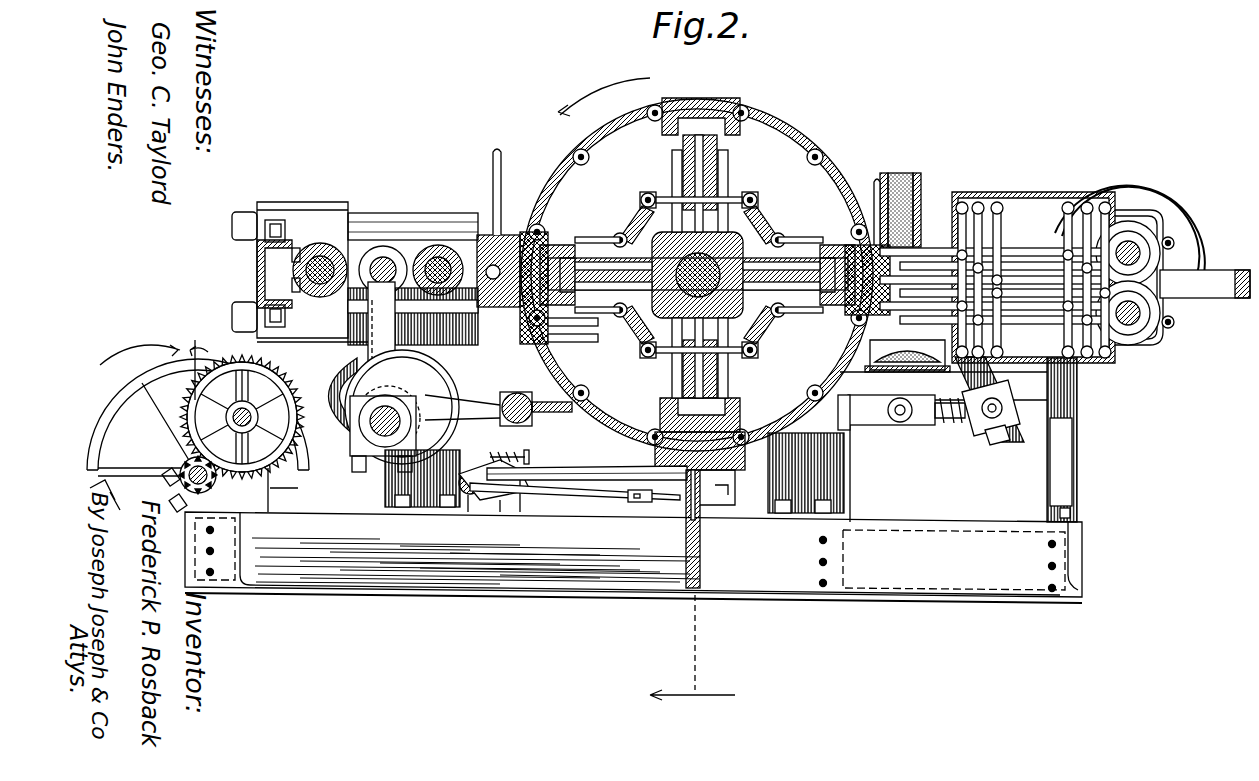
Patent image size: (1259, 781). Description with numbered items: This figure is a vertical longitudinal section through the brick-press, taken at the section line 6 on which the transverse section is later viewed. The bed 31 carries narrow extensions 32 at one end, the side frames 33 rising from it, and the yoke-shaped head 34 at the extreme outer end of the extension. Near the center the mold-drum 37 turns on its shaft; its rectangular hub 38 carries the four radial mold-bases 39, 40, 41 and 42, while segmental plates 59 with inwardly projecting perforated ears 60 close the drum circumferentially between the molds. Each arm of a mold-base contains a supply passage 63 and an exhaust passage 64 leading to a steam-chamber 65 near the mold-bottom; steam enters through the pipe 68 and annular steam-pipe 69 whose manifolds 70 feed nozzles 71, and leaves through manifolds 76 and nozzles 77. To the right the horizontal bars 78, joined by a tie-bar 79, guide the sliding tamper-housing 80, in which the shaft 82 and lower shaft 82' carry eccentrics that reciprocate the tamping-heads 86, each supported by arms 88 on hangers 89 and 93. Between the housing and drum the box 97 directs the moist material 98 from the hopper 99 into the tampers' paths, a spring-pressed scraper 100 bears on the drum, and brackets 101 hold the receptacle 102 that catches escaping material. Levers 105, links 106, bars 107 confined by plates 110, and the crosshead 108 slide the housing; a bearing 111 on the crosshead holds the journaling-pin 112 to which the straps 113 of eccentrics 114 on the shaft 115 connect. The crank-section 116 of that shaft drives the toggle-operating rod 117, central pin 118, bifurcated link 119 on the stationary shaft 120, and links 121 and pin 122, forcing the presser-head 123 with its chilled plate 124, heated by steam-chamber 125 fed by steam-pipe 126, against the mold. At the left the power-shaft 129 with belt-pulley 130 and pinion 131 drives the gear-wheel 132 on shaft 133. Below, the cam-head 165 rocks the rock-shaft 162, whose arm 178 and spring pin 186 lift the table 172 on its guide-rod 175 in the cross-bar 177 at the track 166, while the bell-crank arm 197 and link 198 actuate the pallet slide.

The section line 6 is at (692, 661).
The bed 31 is at (540, 600).
The narrow hollow extension 32 is at (1000, 530).
The frame 33 is at (855, 482).
The yoke-shaped head 34 is at (1077, 460).
The mold-drum 37 is at (770, 100).
The hub 38 is at (790, 235).
The mold-base 39 is at (805, 255).
The mold-base 40 is at (683, 160).
The mold-base 41 is at (565, 331).
The mold-base 42 is at (698, 351).
The segmental plate 59 is at (697, 264).
The perforated ear 60 is at (698, 275).
The steam-passage 63 is at (680, 160).
The steam-passage 64 is at (728, 168).
The steam-chamber 65 is at (745, 140).
The pipe 68 is at (765, 268).
The annular steam-pipe 69 is at (699, 276).
The manifold 70 is at (731, 265).
The nozzle 71 is at (663, 280).
The manifold 76 is at (709, 278).
The nozzle 77 is at (699, 251).
The horizontal bar 78 is at (1208, 272).
The tie-bar 79 is at (1238, 298).
The tamper-housing 80 is at (1045, 192).
The shaft 82 is at (1147, 225).
The lower shaft 82' is at (1145, 328).
The tamping-head 86 is at (992, 289).
The arm 88 is at (1038, 280).
The hanger 89 is at (1100, 232).
The hanger 93 is at (970, 240).
The box 97 is at (921, 215).
The moist material 98 is at (921, 180).
The hopper 99 is at (880, 175).
The spring-pressed scraper 100 is at (874, 200).
The bracket 101 is at (915, 375).
The receptacle 102 is at (891, 410).
The lever 105 is at (995, 445).
The link 106 is at (968, 425).
The bar 107 is at (850, 420).
The crosshead 108 is at (618, 454).
The plate 110 is at (858, 473).
The bearing 111 is at (587, 462).
The journaling-pin 112 is at (529, 461).
The strap 113 is at (400, 470).
The eccentric 114 is at (495, 409).
The shaft 115 is at (402, 407).
The crank-section 116 is at (380, 430).
The toggle-operating rod 117 is at (370, 322).
The central pin 118 is at (383, 256).
The bifurcated link 119 is at (352, 212).
The stationary shaft 120 is at (316, 256).
The link 121 is at (410, 250).
The pin 122 is at (438, 245).
The presser-head 123 is at (520, 232).
The plate 124 is at (548, 240).
The steam-chamber 125 is at (490, 265).
The steam-pipe 126 is at (482, 184).
The power-shaft 129 is at (182, 468).
The belt-pulley 130 is at (128, 395).
The pinion 131 is at (165, 488).
The gear-wheel 132 is at (238, 397).
The shaft 133 is at (190, 423).
The rock-shaft 162 is at (458, 490).
The cam-head 165 is at (368, 345).
The track 166 is at (722, 505).
The table 172 is at (750, 475).
The guide-rod 175 is at (698, 538).
The cross-bar 177 is at (700, 568).
The arm 178 is at (686, 535).
The pin 186 is at (560, 497).
The arm 197 is at (600, 500).
The link 198 is at (652, 500).